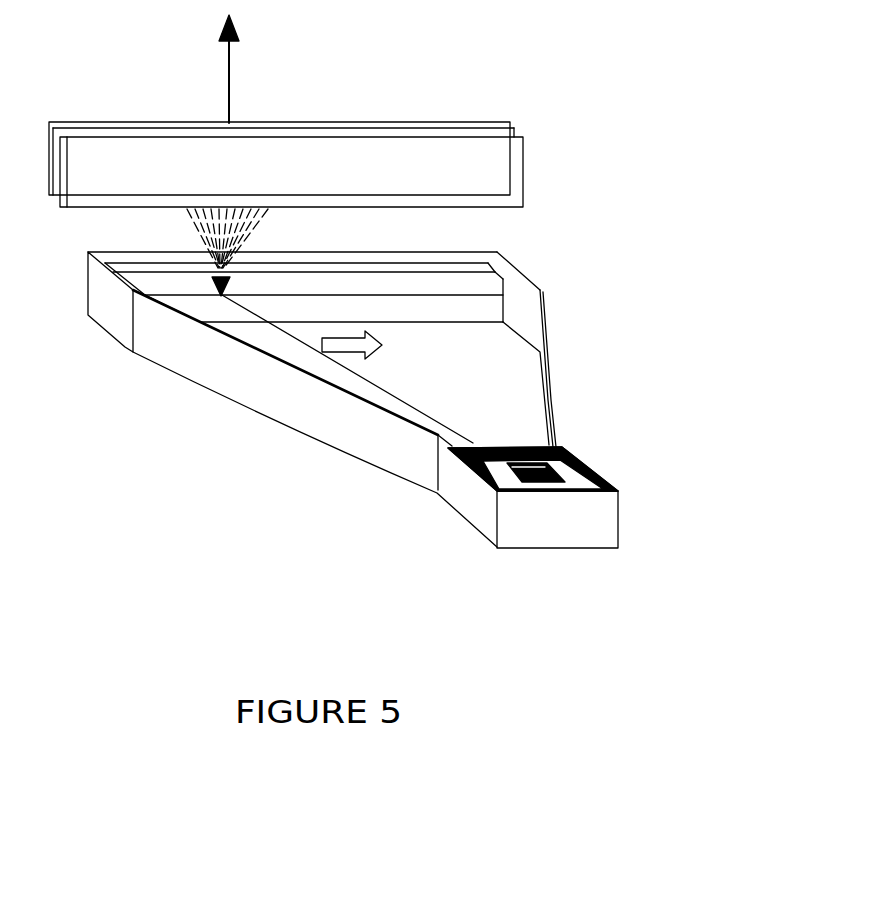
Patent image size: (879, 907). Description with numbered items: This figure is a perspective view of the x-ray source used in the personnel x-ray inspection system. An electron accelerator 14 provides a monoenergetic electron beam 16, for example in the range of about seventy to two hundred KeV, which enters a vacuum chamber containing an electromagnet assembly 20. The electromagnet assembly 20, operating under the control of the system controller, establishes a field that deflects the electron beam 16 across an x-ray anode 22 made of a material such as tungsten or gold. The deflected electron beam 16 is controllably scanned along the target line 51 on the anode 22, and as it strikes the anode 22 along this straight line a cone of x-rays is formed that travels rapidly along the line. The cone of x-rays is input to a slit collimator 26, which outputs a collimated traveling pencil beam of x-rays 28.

The electron accelerator 14 is at (597, 430).
The electron beam 16 is at (440, 398).
The electromagnet assembly 20 is at (612, 465).
The x-ray anode 22 is at (525, 290).
The slit collimator 26 is at (523, 170).
The pencil beam of x-rays 28 is at (229, 63).
The target line 51 is at (412, 287).